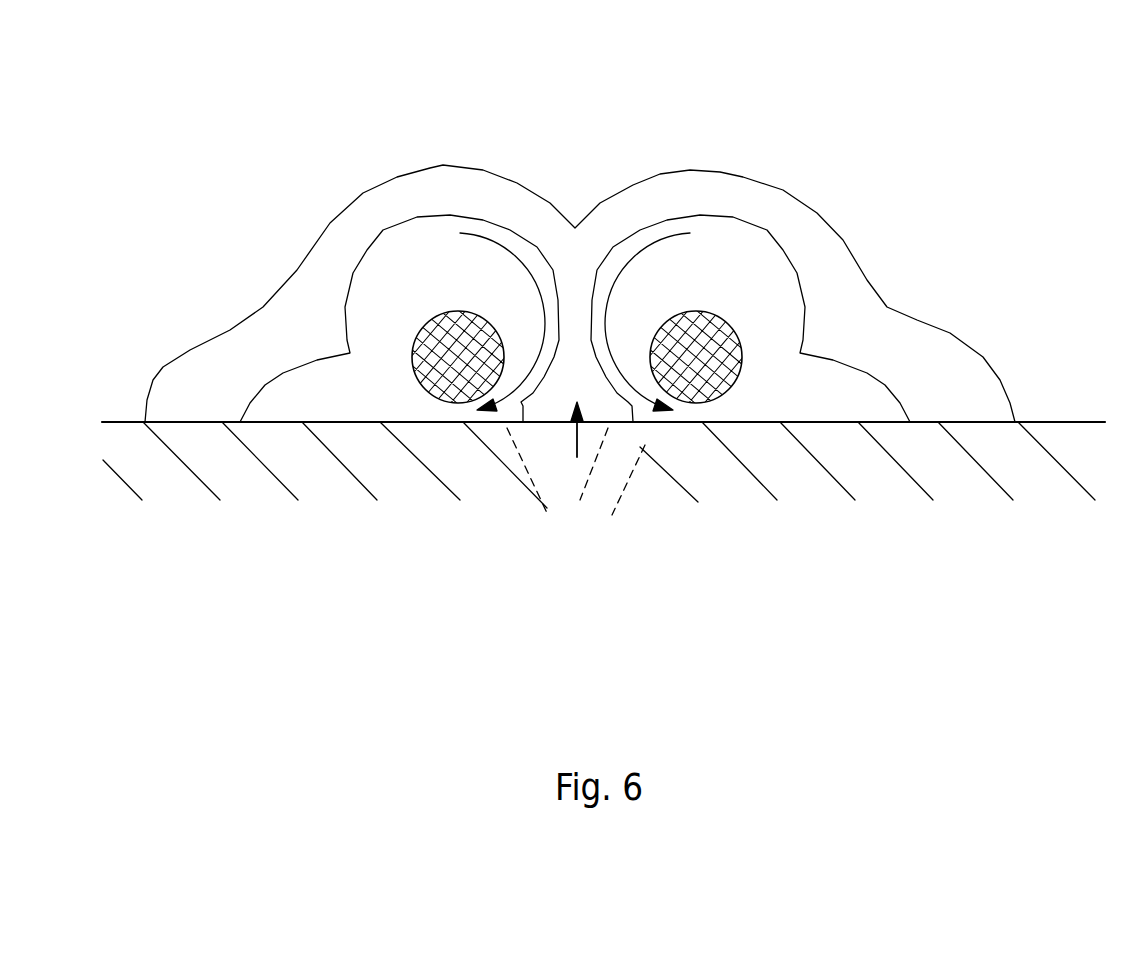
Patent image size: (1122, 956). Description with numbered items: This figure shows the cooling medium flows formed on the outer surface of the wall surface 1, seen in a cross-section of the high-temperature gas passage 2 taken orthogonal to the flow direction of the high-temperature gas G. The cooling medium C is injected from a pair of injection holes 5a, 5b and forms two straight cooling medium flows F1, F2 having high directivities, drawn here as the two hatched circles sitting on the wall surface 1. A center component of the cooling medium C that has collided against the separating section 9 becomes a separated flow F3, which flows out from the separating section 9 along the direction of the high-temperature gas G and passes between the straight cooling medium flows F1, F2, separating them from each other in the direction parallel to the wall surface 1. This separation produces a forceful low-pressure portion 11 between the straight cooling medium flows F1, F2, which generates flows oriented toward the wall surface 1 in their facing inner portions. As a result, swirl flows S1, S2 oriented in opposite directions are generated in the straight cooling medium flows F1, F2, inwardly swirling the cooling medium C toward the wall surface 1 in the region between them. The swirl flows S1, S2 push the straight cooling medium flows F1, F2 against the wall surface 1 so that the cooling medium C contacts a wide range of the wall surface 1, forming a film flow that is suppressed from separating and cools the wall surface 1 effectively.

The wall surface 1 is at (1058, 422).
The high-temperature gas passage 2 is at (1027, 217).
The high-temperature gas G is at (212, 237).
The cooling medium C is at (795, 182).
The swirl flow S1 is at (659, 237).
The swirl flow S2 is at (498, 256).
The straight cooling medium flow F1 is at (742, 385).
The straight cooling medium flow F2 is at (437, 403).
The separated flow F3 is at (574, 437).
The low-pressure portion 11 is at (587, 385).
The separating section 9 is at (583, 465).
The injection hole 5a is at (623, 458).
The injection hole 5b is at (535, 452).